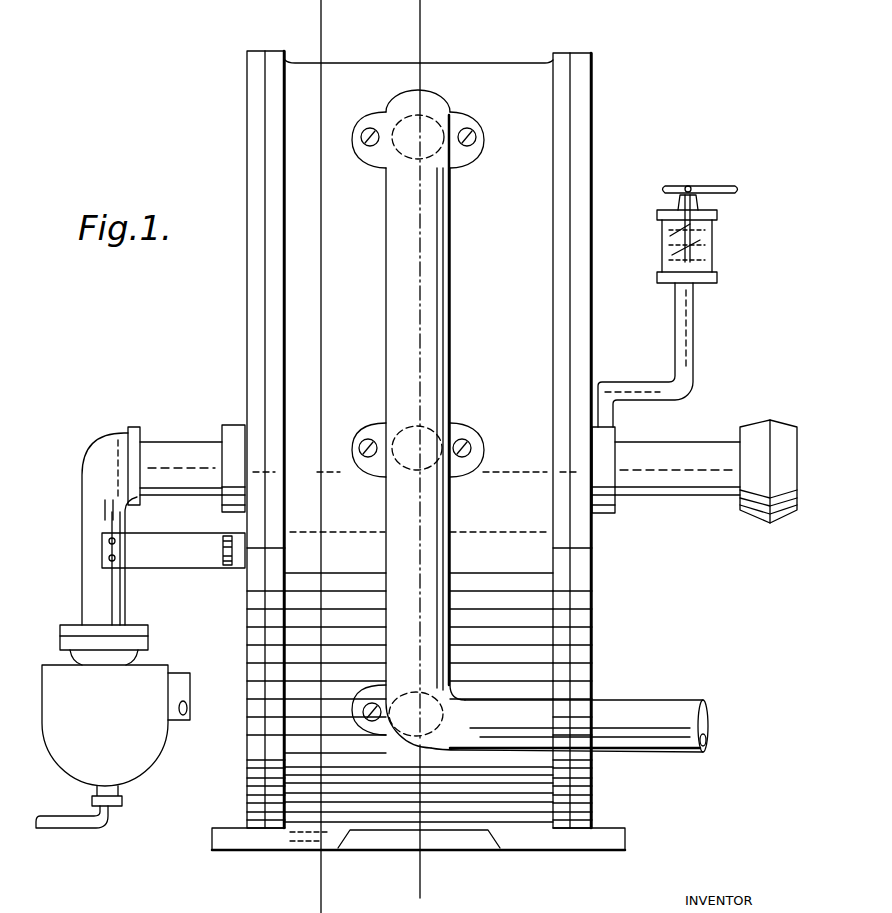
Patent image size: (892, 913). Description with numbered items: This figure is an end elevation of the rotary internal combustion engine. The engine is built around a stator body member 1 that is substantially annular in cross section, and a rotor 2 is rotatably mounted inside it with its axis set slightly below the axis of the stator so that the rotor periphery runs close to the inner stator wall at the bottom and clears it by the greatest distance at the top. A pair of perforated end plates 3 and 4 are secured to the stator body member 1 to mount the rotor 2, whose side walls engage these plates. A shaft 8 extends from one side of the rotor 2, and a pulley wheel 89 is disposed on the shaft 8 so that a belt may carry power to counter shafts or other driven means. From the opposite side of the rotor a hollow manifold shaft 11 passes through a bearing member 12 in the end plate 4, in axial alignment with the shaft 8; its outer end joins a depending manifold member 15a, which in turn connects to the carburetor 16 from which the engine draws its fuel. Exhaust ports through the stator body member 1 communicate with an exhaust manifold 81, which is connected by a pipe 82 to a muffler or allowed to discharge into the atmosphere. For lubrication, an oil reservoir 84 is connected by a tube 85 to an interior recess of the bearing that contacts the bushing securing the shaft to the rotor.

The stator body member 1 is at (489, 76).
The rotor 2 is at (314, 5).
The end plate 3 is at (582, 115).
The end plate 4 is at (247, 84).
The shaft 8 is at (676, 465).
The manifold shaft 11 is at (165, 448).
The bearing member 12 is at (233, 428).
The depending manifold member 15a is at (105, 450).
The carburetor 16 is at (138, 688).
The exhaust manifold 81 is at (415, 312).
The pipe 82 is at (662, 712).
The oil reservoir 84 is at (727, 247).
The tube 85 is at (680, 352).
The pulley wheel 89 is at (780, 432).